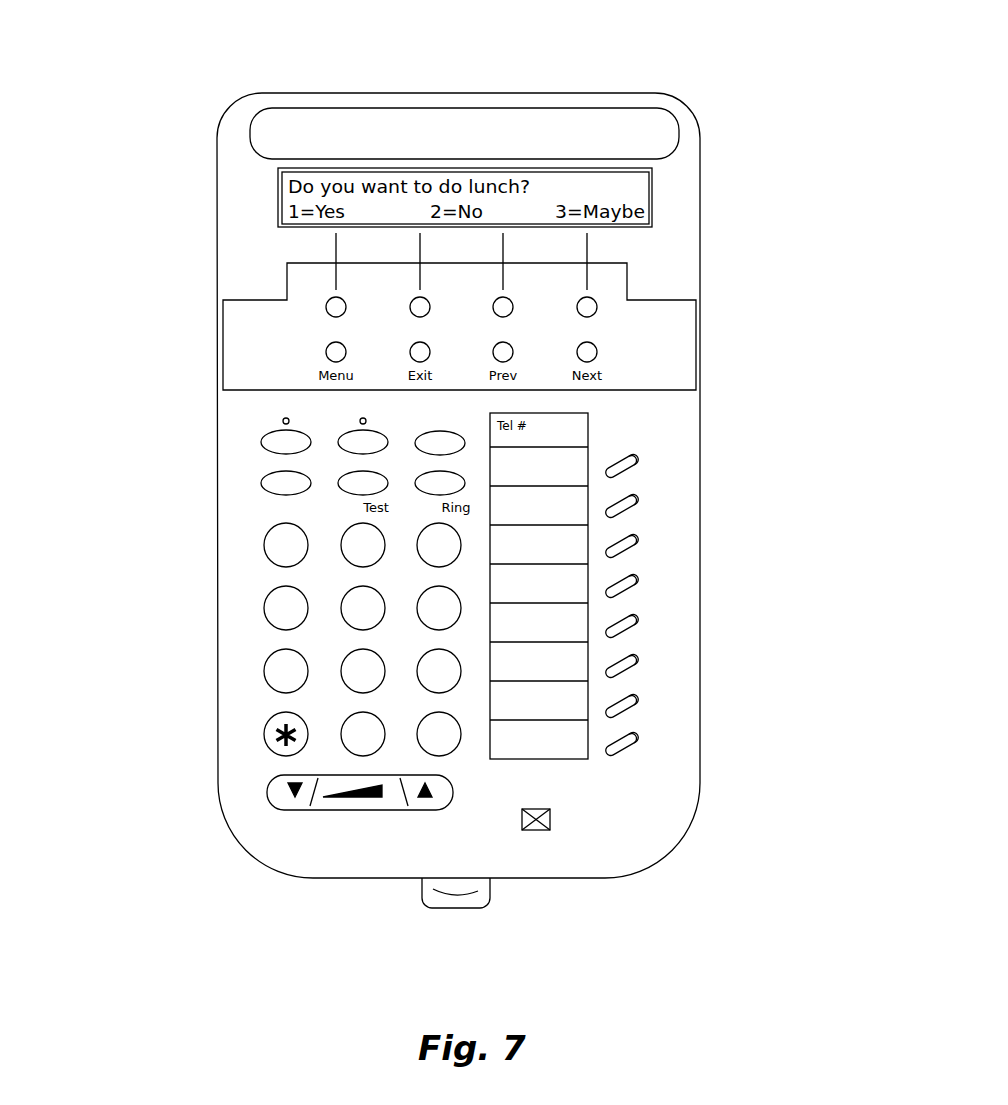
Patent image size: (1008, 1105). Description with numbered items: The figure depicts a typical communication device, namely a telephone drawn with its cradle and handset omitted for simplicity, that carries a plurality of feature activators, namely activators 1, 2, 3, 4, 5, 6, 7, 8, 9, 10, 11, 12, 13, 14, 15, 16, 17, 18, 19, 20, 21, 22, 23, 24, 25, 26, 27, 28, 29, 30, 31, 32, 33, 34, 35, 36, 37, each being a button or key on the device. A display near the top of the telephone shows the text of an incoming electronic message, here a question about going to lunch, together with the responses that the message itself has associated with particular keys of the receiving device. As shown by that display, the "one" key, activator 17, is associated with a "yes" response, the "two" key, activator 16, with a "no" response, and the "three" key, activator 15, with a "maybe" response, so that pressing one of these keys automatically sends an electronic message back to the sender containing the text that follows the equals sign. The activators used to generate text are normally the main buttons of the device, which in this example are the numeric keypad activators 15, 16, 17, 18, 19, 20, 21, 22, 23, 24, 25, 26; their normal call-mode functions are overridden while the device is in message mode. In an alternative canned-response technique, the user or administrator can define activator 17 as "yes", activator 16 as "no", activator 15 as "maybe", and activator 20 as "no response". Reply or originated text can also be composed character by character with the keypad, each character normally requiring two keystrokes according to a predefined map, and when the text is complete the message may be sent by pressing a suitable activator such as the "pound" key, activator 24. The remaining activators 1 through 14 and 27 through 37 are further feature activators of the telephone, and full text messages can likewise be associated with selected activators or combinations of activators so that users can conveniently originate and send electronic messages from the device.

The activator 1 is at (332, 298).
The activator 2 is at (430, 297).
The activator 3 is at (513, 303).
The activator 4 is at (597, 307).
The activator 5 is at (328, 355).
The activator 6 is at (431, 347).
The activator 7 is at (514, 350).
The activator 8 is at (600, 352).
The activator 9 is at (432, 432).
The activator 10 is at (345, 434).
The activator 11 is at (262, 442).
The activator 12 is at (420, 477).
The activator 13 is at (340, 480).
The activator 14 is at (262, 486).
The activator 15 is at (418, 535).
The activator 16 is at (342, 535).
The activator 17 is at (265, 552).
The activator 18 is at (418, 598).
The activator 19 is at (342, 598).
The activator 20 is at (265, 615).
The activator 21 is at (418, 660).
The activator 22 is at (342, 662).
The activator 23 is at (265, 680).
The activator 24 is at (418, 726).
The activator 25 is at (342, 728).
The activator 26 is at (265, 745).
The activator 27 is at (283, 800).
The activator 28 is at (343, 810).
The activator 29 is at (422, 810).
The activator 30 is at (637, 457).
The activator 31 is at (637, 497).
The activator 32 is at (637, 537).
The activator 33 is at (637, 577).
The activator 34 is at (637, 617).
The activator 35 is at (637, 657).
The activator 36 is at (637, 697).
The activator 37 is at (637, 737).